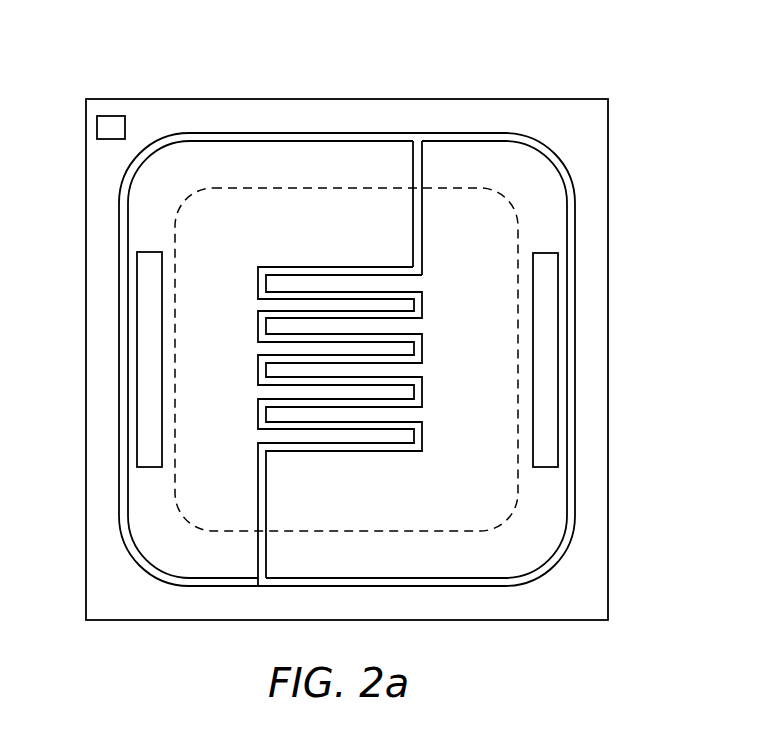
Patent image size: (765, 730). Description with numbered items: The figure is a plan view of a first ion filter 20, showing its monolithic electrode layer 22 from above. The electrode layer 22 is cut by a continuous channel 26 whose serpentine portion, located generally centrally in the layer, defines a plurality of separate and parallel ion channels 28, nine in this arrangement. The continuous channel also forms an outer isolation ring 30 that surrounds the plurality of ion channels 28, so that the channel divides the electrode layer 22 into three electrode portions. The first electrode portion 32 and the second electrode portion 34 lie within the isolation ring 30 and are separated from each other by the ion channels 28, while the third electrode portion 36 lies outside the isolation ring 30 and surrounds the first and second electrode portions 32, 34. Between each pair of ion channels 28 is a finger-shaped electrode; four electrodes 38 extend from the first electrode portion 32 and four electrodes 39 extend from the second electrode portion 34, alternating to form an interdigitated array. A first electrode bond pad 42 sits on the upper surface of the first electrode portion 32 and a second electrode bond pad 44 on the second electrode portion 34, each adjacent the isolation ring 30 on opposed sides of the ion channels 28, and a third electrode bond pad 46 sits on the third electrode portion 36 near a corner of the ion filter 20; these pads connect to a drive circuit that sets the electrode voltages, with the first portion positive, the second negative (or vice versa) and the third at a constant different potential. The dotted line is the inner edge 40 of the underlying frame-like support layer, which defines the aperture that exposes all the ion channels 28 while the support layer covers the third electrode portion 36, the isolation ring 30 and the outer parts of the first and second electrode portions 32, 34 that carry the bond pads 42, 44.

The ion filter 20 is at (452, 62).
The monolithic electrode layer 22 is at (343, 505).
The continuous channel 26 is at (418, 172).
The ion channels 28 is at (343, 295).
The outer isolation ring 30 is at (500, 587).
The first electrode portion 32 is at (492, 232).
The second electrode portion 34 is at (197, 440).
The third electrode portion 36 is at (583, 118).
The electrodes 38 is at (271, 283).
The electrodes 39 is at (407, 348).
The inner edge of the support layer 40 is at (513, 503).
The first electrode bond pad 42 is at (546, 359).
The second electrode bond pad 44 is at (148, 359).
The third electrode bond pad 46 is at (112, 120).